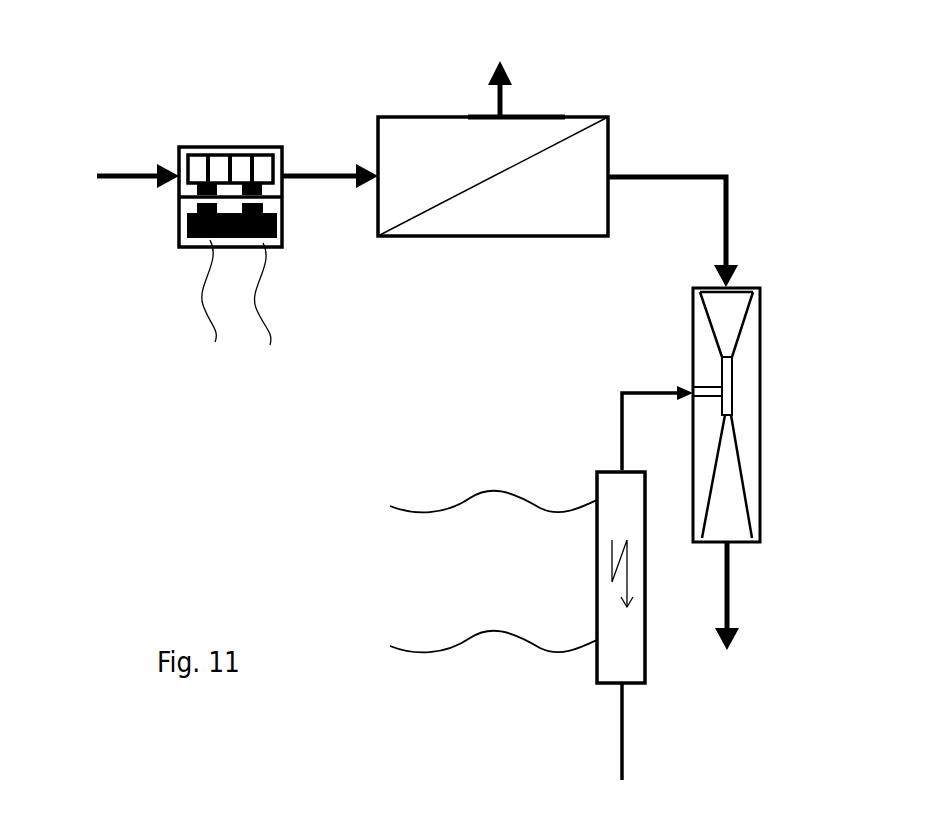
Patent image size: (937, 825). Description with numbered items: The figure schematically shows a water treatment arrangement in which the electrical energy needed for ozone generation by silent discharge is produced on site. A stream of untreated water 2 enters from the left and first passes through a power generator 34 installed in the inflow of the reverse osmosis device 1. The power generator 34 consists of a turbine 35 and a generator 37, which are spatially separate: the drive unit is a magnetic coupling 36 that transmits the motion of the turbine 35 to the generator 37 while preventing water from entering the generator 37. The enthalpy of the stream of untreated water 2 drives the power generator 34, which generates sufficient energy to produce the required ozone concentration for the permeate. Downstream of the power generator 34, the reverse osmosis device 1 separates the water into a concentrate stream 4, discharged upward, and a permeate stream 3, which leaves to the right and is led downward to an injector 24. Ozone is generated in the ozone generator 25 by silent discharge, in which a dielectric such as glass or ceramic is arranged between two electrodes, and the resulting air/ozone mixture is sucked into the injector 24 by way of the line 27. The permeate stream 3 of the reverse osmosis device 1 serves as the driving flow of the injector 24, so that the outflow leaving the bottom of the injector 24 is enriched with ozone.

The reverse osmosis device 1 is at (427, 113).
The stream of untreated water 2 is at (333, 188).
The permeate stream 3 is at (647, 162).
The concentrate stream 4 is at (513, 60).
The injector 24 is at (767, 376).
The ozone generator 25 is at (590, 490).
The line 27 is at (632, 385).
The power generator 34 is at (262, 145).
The turbine 35 is at (205, 155).
The magnetic coupling 36 is at (195, 188).
The generator 37 is at (230, 240).